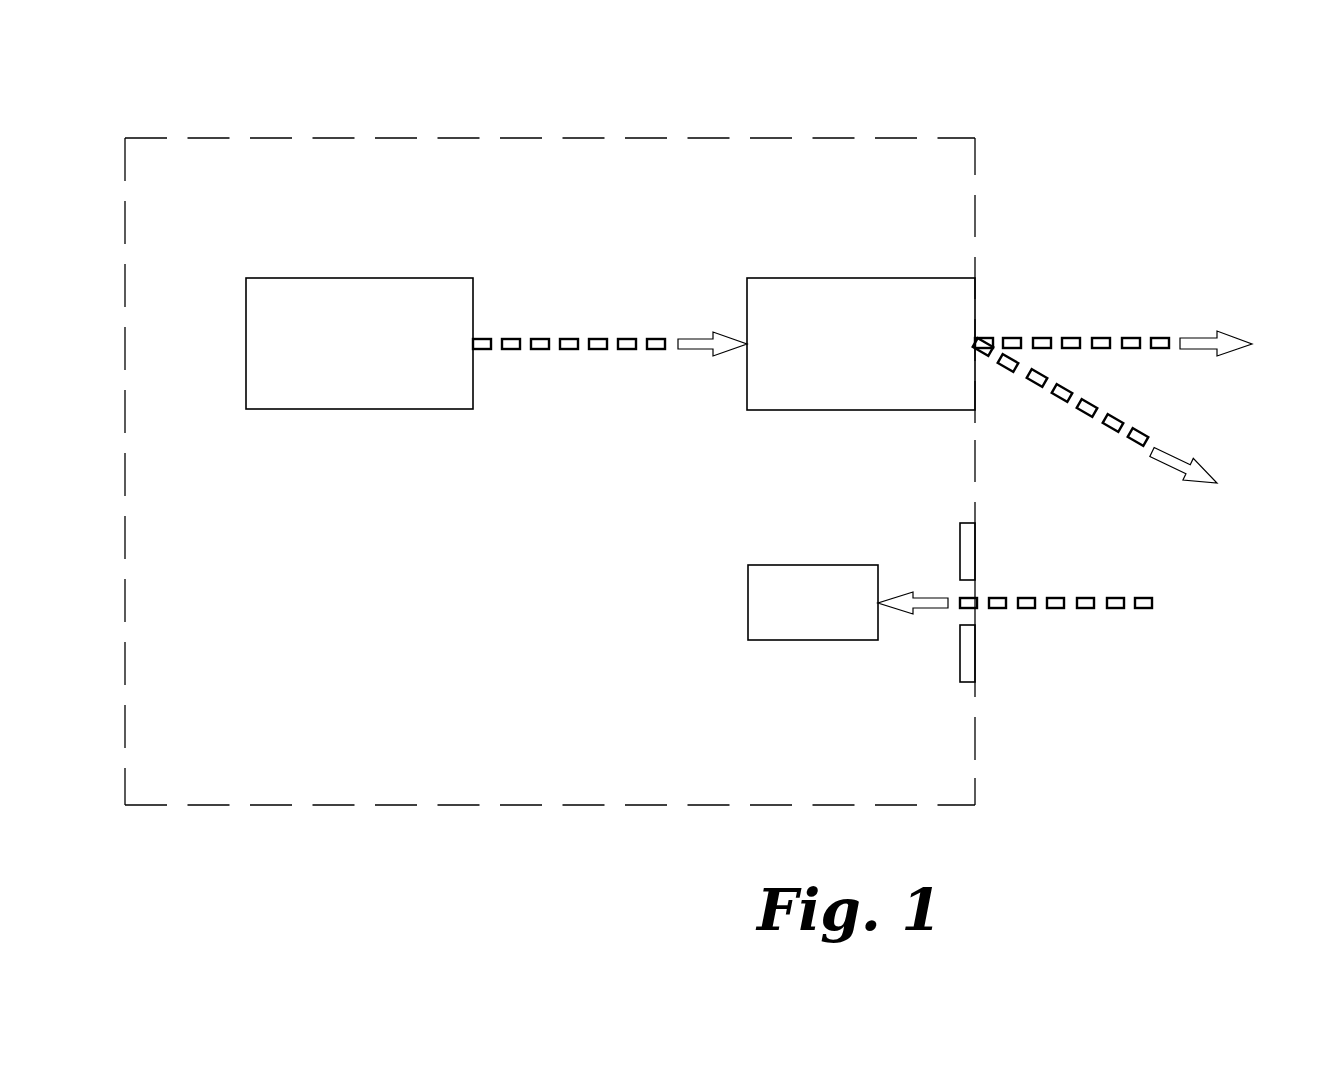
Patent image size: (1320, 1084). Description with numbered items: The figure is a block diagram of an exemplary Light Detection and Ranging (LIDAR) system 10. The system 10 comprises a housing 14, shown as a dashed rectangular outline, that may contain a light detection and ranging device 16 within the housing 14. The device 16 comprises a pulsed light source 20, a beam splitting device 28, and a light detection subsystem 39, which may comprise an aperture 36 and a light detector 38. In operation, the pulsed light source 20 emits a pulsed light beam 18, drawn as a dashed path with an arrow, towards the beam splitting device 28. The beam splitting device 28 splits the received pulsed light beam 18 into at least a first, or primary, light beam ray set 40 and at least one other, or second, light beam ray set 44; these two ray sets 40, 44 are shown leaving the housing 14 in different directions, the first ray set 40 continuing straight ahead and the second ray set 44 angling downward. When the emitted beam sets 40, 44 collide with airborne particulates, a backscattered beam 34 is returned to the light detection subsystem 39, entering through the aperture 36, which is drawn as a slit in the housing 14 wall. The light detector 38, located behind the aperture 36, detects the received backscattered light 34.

The LIDAR system 10 is at (1060, 164).
The housing 14 is at (945, 134).
The light detection and ranging device 16 is at (373, 221).
The pulsed light beam 18 is at (596, 369).
The pulsed light source 20 is at (359, 343).
The beam splitting device 28 is at (861, 344).
The backscattered beam 34 is at (1066, 614).
The aperture 36 is at (982, 589).
The light detector 38 is at (813, 602).
The light detection subsystem 39 is at (721, 653).
The first light beam ray set 40 is at (1178, 320).
The second light beam ray set 44 is at (1182, 439).